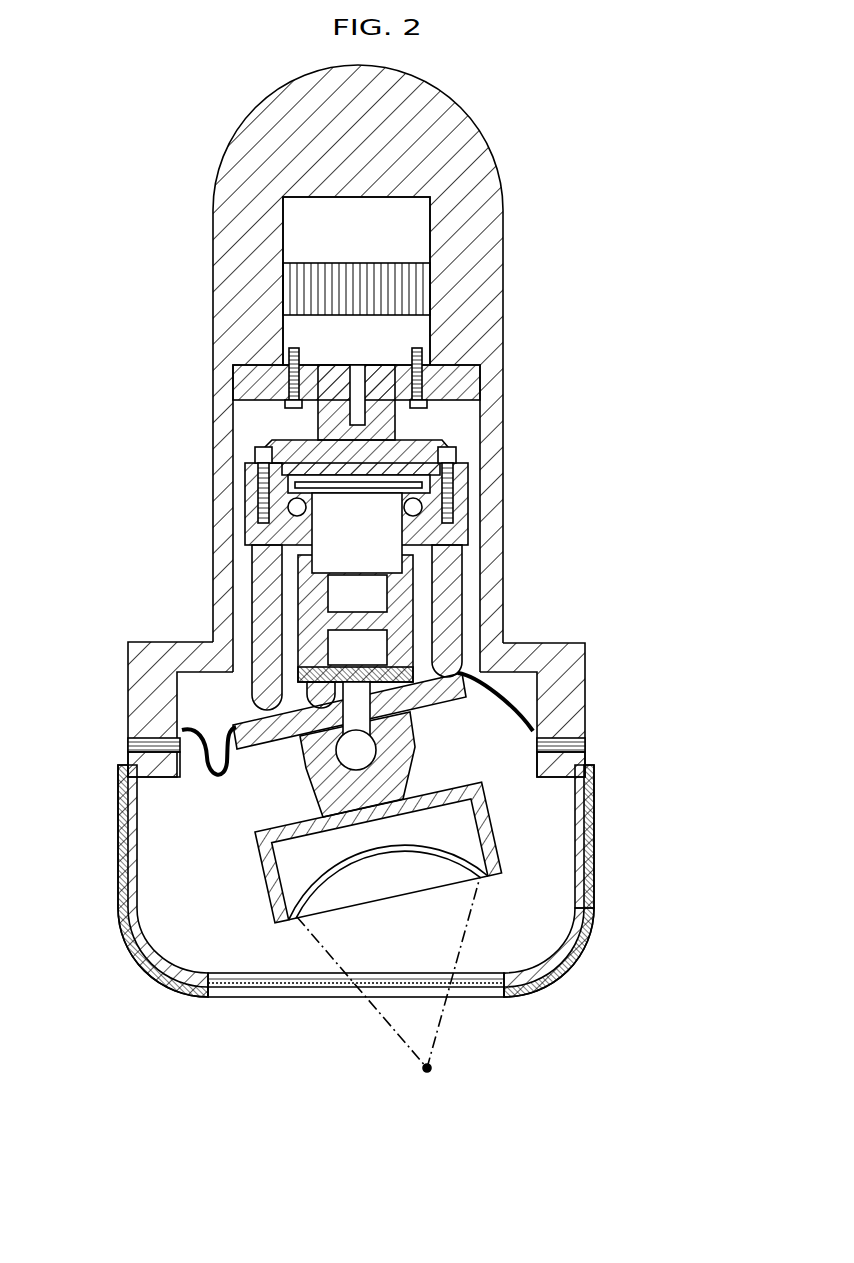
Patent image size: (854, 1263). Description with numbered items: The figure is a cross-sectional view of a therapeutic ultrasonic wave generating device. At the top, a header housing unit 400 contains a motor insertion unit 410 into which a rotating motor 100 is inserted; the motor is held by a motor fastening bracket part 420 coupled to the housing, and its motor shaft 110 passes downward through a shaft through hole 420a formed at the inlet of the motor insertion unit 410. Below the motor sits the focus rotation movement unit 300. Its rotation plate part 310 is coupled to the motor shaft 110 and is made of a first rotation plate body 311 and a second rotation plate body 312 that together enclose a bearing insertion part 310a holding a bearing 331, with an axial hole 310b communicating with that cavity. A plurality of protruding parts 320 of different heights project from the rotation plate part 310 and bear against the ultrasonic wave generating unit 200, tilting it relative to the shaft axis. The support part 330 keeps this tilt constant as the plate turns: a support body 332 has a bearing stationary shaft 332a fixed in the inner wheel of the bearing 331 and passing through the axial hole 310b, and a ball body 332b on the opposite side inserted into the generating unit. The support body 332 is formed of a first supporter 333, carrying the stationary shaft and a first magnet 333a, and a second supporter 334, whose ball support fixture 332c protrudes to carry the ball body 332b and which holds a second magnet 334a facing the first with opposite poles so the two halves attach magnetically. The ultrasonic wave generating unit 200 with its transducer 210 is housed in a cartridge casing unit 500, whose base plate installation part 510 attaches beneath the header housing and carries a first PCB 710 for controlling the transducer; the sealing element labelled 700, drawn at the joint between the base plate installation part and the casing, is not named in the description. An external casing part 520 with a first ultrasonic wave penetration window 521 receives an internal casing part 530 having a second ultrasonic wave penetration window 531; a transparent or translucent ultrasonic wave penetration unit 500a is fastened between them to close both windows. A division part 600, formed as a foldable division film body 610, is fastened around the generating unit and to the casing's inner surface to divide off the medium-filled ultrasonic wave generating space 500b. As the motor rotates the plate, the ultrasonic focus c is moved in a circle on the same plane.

The rotating motor 100 is at (400, 240).
The motor shaft 110 is at (357, 387).
The ultrasonic wave generating unit 200 is at (548, 735).
The transducer 210 is at (280, 888).
The focus rotation movement unit 300 is at (237, 427).
The rotation plate part 310 is at (351, 479).
The bearing insertion part 310a is at (248, 455).
The axial hole 310b is at (440, 482).
The first rotation plate body 311 is at (258, 466).
The second rotation plate body 312 is at (258, 510).
The protruding parts 320 is at (262, 625).
The support part 330 is at (406, 620).
The bearing 331 is at (292, 510).
The support body 332 is at (471, 620).
The bearing stationary shaft 332a is at (382, 510).
The ball body 332b is at (327, 773).
The ball support fixture 332c is at (300, 742).
The first supporter 333 is at (457, 578).
The first magnet 333a is at (372, 598).
The second supporter 334 is at (457, 598).
The second magnet 334a is at (372, 657).
The header housing unit 400 is at (228, 218).
The motor insertion unit 410 is at (285, 242).
The motor fastening bracket part 420 is at (255, 383).
The shaft through hole 420a is at (397, 378).
The cartridge casing unit 500 is at (426, 912).
The ultrasonic wave penetration unit 500a is at (432, 984).
The ultrasonic wave generating space 500b is at (277, 965).
The base plate installation part 510 is at (588, 798).
The external casing part 520 is at (585, 888).
The first ultrasonic wave penetration window 521 is at (222, 992).
The internal casing part 530 is at (579, 858).
The second ultrasonic wave penetration window 531 is at (327, 980).
The division part 600 is at (371, 692).
The division film body 610 is at (177, 707).
The sealing member 700 is at (587, 742).
The first PCB 710 is at (587, 758).
The focus c is at (388, 982).